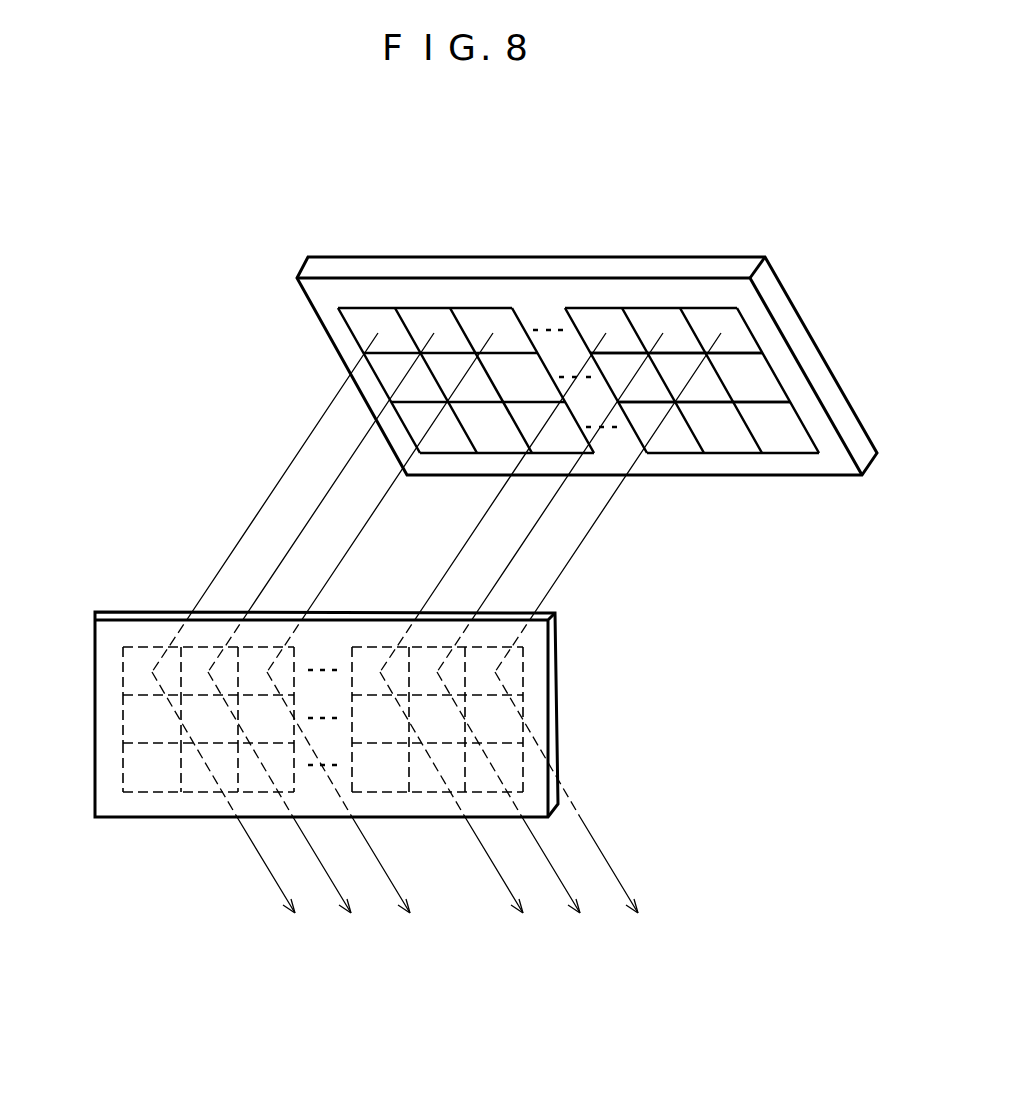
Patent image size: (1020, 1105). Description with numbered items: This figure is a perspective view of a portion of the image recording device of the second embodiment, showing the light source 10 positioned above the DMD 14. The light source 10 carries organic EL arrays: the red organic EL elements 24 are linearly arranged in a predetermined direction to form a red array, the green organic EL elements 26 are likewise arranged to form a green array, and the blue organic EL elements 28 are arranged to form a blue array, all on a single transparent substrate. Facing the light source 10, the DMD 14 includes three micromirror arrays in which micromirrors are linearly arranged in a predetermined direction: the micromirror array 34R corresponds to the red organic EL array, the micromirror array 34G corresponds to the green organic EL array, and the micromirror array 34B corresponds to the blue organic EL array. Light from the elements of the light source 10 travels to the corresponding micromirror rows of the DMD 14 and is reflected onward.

The light source 10 is at (772, 280).
The red organic EL elements 24 is at (742, 340).
The green organic EL elements 26 is at (762, 378).
The blue organic EL elements 28 is at (795, 432).
The DMD 14 is at (550, 688).
The micromirror array 34R is at (130, 670).
The micromirror array 34G is at (133, 725).
The micromirror array 34B is at (135, 780).